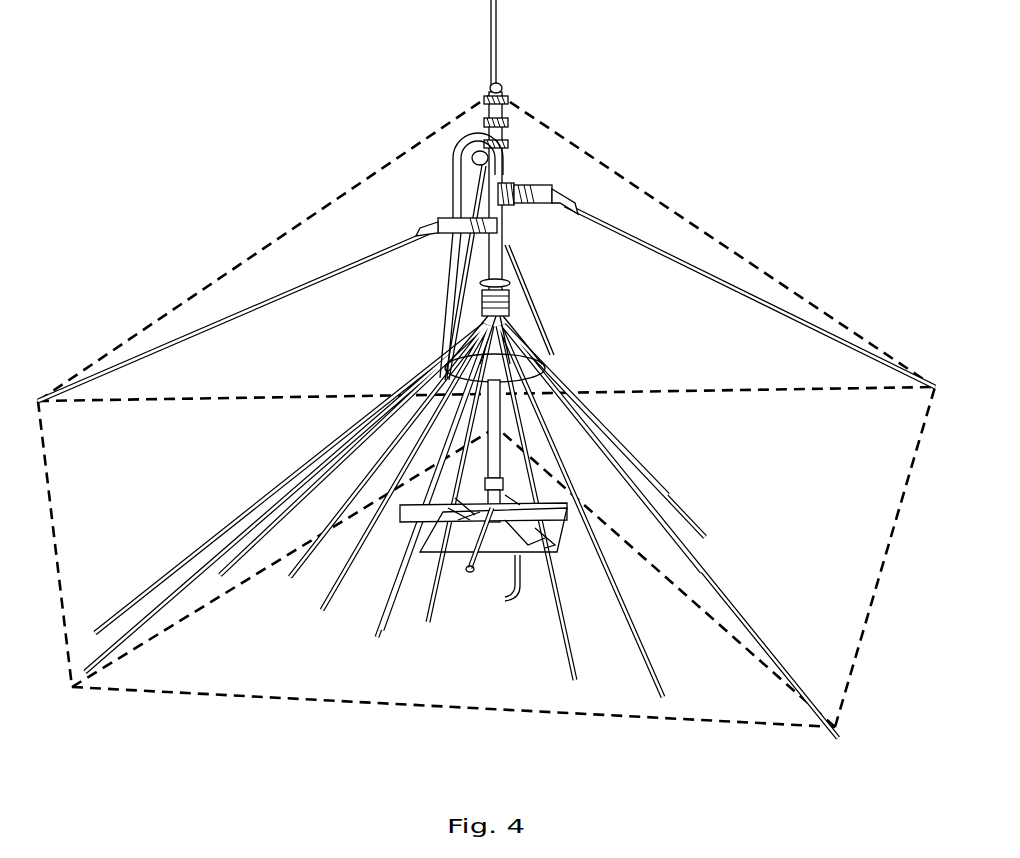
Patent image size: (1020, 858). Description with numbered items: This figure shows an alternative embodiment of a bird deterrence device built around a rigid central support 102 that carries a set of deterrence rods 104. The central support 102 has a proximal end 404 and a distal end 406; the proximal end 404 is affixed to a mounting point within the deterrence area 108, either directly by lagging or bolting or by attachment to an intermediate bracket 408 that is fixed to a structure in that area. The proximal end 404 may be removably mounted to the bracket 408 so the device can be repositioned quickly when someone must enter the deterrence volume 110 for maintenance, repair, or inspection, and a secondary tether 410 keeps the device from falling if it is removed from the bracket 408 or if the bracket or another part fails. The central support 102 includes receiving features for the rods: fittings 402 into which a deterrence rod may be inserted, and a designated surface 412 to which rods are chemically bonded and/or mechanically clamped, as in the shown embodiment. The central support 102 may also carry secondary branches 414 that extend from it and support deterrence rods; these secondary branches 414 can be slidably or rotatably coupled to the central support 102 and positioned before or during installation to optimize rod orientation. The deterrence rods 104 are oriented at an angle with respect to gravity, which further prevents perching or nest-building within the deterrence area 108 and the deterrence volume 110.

The central support 102 is at (495, 422).
The deterrence rods 104 is at (718, 283).
The deterrence area 108 is at (320, 660).
The deterrence volume 110 is at (312, 255).
The fittings 402 is at (560, 190).
The proximal end 404 is at (497, 455).
The distal end 406 is at (498, 107).
The intermediate bracket 408 is at (488, 485).
The secondary tether 410 is at (460, 152).
The surface 412 is at (510, 305).
The secondary branches 414 is at (535, 190).